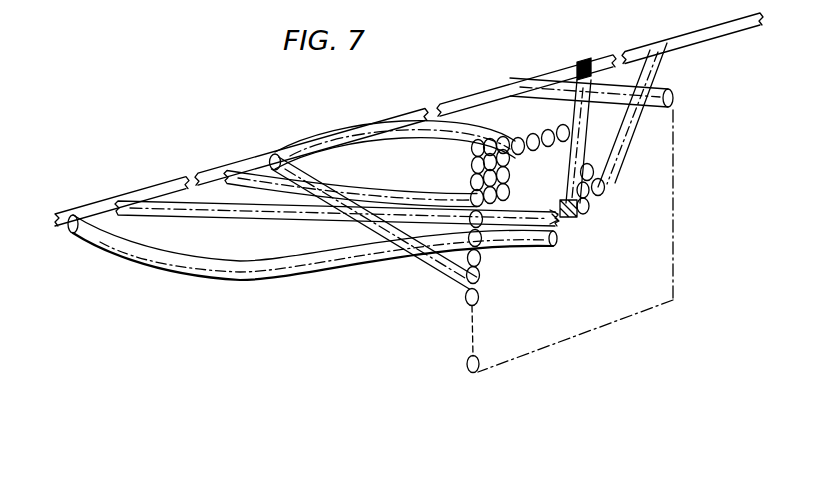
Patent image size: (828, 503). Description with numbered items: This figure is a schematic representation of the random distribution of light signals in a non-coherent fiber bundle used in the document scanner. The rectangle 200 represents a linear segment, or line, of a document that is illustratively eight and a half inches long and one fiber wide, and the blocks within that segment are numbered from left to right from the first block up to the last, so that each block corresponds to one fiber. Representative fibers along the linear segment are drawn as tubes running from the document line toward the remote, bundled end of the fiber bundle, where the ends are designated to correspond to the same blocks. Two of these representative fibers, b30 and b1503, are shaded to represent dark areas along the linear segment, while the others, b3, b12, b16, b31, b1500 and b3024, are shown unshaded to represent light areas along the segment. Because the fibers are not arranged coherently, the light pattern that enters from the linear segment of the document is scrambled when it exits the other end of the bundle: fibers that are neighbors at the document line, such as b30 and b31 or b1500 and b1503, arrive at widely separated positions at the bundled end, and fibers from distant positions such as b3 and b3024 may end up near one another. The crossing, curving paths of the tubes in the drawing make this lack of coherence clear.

The rectangle 200 is at (393, 118).
The unshaded fiber block b3 is at (80, 208).
The unshaded fiber block b12 is at (136, 178).
The unshaded fiber block b16 is at (222, 172).
The shaded fiber block b30 is at (280, 158).
The unshaded fiber block b31 is at (313, 140).
The unshaded fiber block b1500 is at (520, 80).
The shaded fiber block b1503 is at (583, 62).
The unshaded fiber block b3024 is at (662, 42).